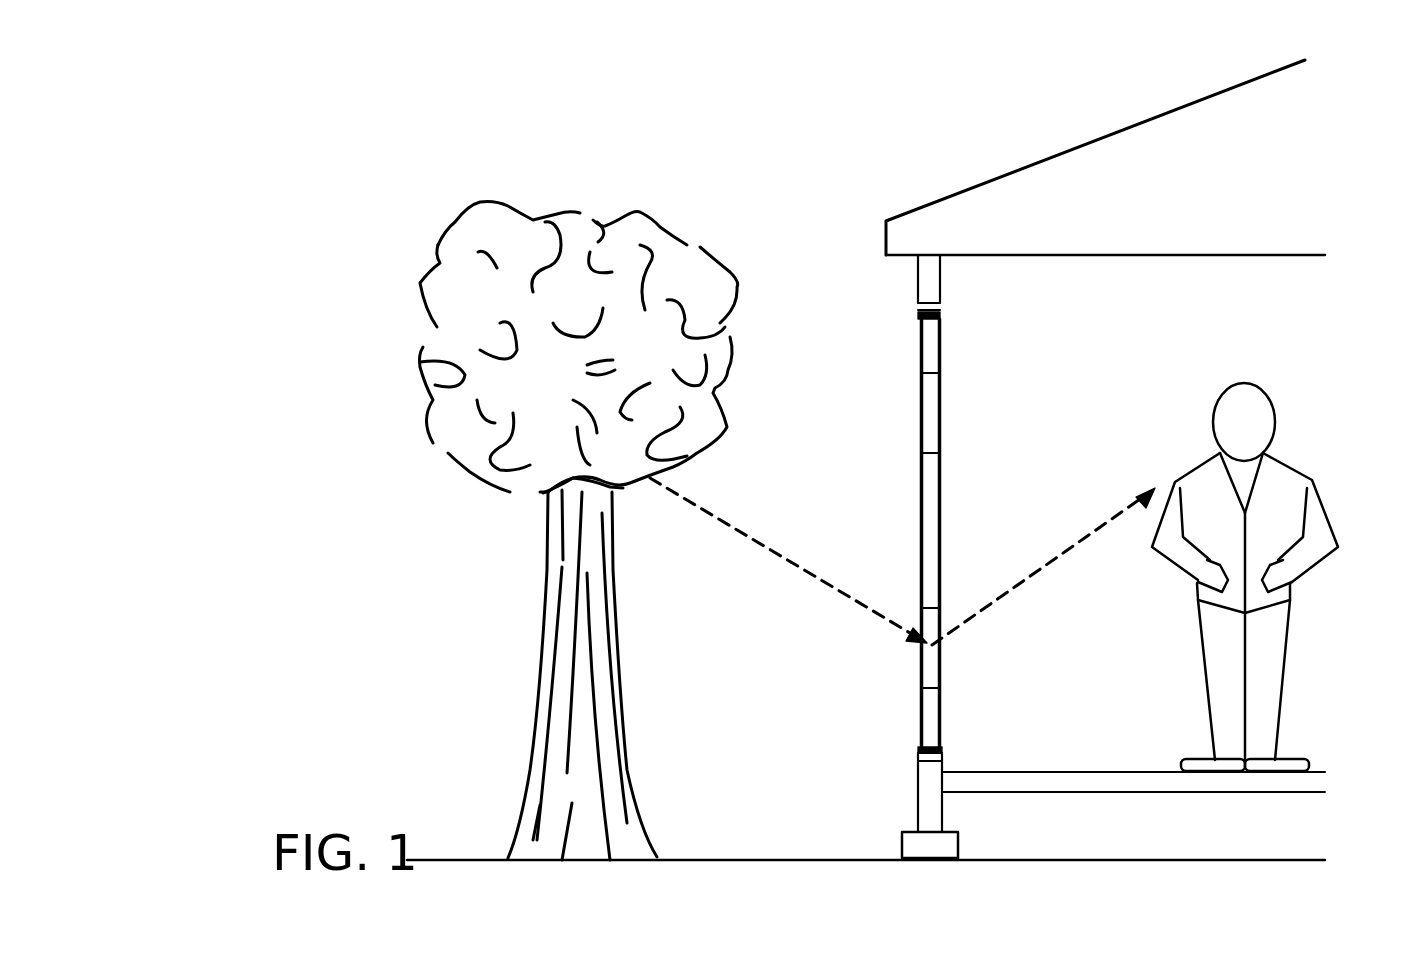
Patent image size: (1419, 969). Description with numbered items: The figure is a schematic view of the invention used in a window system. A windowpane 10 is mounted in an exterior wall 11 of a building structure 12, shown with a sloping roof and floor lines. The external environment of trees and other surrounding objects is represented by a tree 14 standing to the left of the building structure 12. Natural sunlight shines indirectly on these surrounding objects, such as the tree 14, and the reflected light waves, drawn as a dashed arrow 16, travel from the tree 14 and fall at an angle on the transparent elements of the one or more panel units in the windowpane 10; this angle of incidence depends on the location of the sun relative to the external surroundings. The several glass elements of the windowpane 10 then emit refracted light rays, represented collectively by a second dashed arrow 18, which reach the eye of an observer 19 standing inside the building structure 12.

The windowpane 10 is at (905, 428).
The exterior wall 11 is at (923, 777).
The building structure 12 is at (1023, 153).
The tree 14 is at (665, 228).
The reflected light waves 16 is at (747, 532).
The refracted light rays 18 is at (1058, 553).
The observer 19 is at (1226, 410).